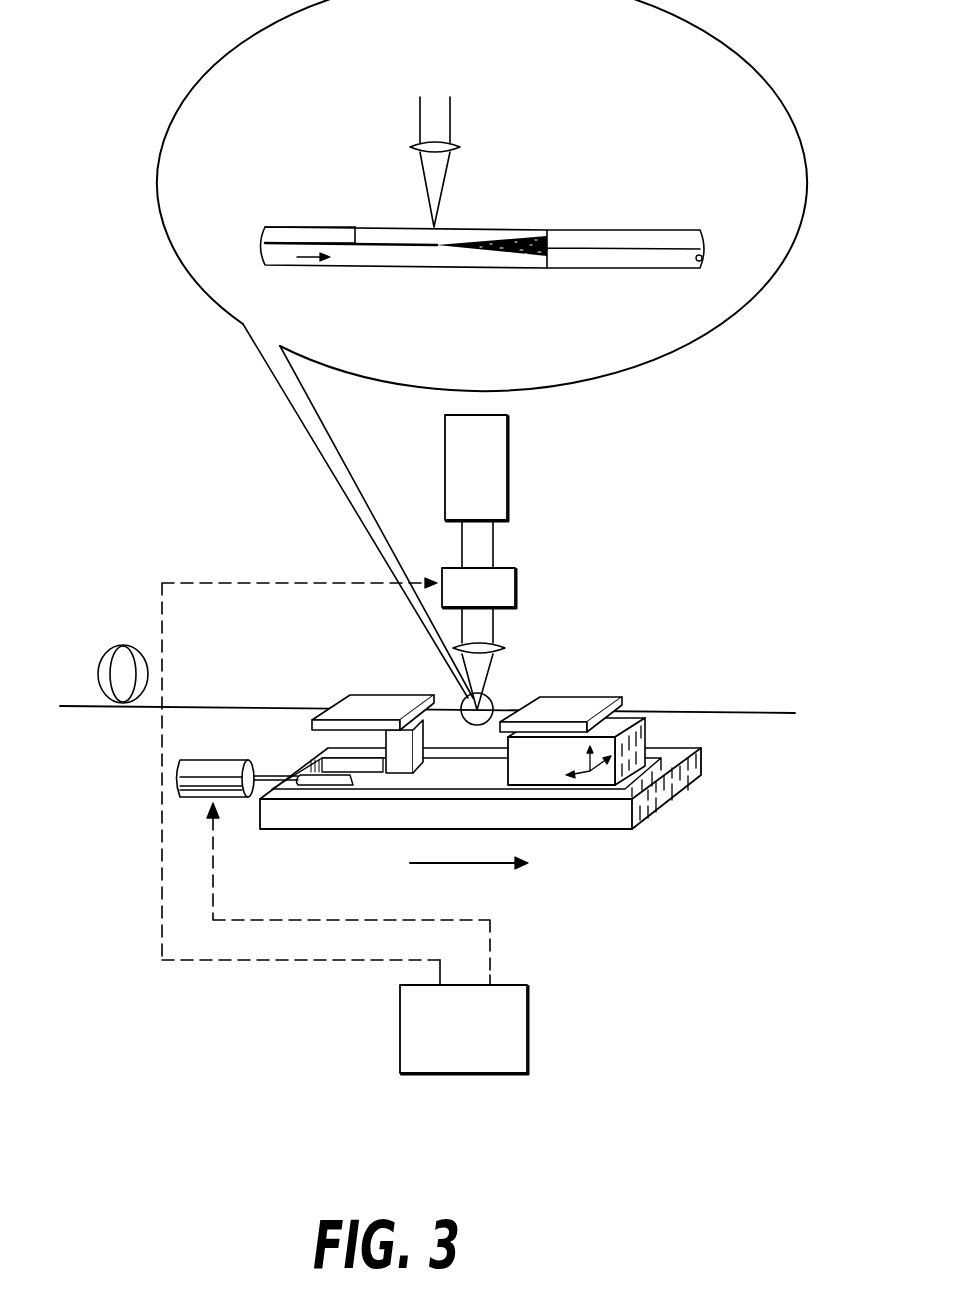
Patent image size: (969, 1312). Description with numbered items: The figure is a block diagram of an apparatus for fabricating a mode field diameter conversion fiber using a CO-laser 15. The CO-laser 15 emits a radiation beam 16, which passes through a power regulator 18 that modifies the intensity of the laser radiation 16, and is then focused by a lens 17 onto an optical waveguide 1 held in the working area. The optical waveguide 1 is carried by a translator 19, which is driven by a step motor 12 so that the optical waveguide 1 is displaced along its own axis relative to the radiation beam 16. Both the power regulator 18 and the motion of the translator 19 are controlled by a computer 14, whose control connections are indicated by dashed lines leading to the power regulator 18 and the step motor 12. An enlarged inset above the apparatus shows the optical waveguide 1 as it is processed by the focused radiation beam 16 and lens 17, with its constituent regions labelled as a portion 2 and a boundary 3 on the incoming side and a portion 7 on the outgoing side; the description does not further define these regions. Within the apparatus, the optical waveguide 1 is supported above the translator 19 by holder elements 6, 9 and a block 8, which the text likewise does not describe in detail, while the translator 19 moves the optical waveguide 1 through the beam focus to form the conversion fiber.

The optical waveguide 1 is at (110, 648).
The fiber coating 2 is at (313, 240).
The coating end / stripped boundary 3 is at (355, 228).
The first holder plate 6 is at (372, 698).
The fiber sheath section 7 is at (705, 712).
The clamp block 8 is at (637, 712).
The second holder plate 9 is at (592, 700).
The step motor 12 is at (220, 770).
The computer 14 is at (345, 826).
The CO-laser 15 is at (477, 468).
The radiation beam 16 is at (440, 123).
The lens 17 is at (440, 148).
The power regulator 18 is at (503, 590).
The translator 19 is at (343, 815).